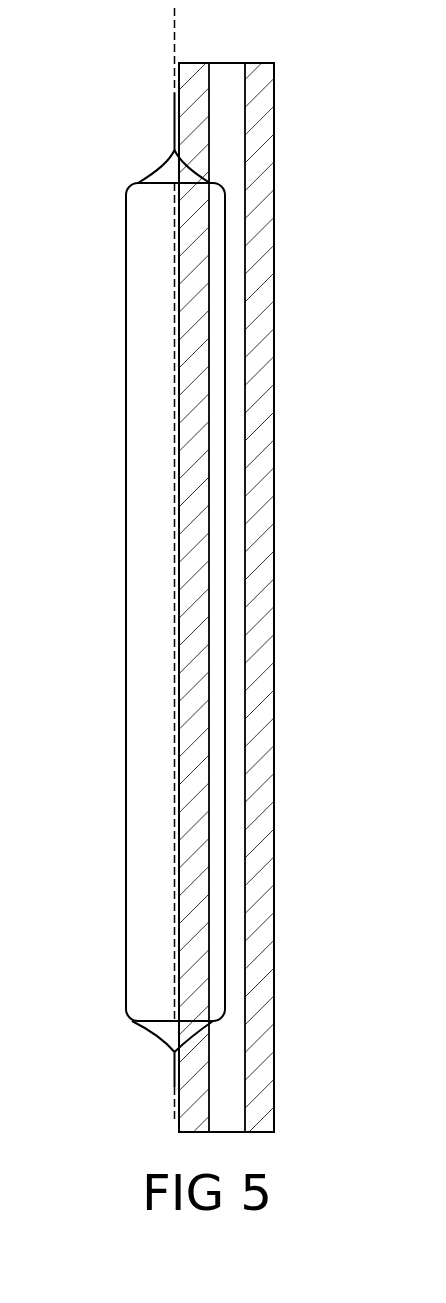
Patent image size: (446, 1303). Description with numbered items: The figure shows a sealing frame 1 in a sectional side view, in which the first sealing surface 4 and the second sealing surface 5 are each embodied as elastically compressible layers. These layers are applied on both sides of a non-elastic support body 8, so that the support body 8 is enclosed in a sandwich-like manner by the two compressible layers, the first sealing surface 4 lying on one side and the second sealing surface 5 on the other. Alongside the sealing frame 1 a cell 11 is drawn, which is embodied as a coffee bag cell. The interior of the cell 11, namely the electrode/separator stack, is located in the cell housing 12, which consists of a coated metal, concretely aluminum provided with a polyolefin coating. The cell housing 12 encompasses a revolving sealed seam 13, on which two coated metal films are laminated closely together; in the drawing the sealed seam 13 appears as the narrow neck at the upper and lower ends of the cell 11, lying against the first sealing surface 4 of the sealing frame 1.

The sealing frame 1 is at (255, 488).
The first sealing surface 4 is at (193, 75).
The second sealing surface 5 is at (263, 1058).
The support body 8 is at (235, 193).
The cell 11 is at (130, 216).
The cell housing 12 is at (127, 732).
The sealed seam 13 is at (174, 110).